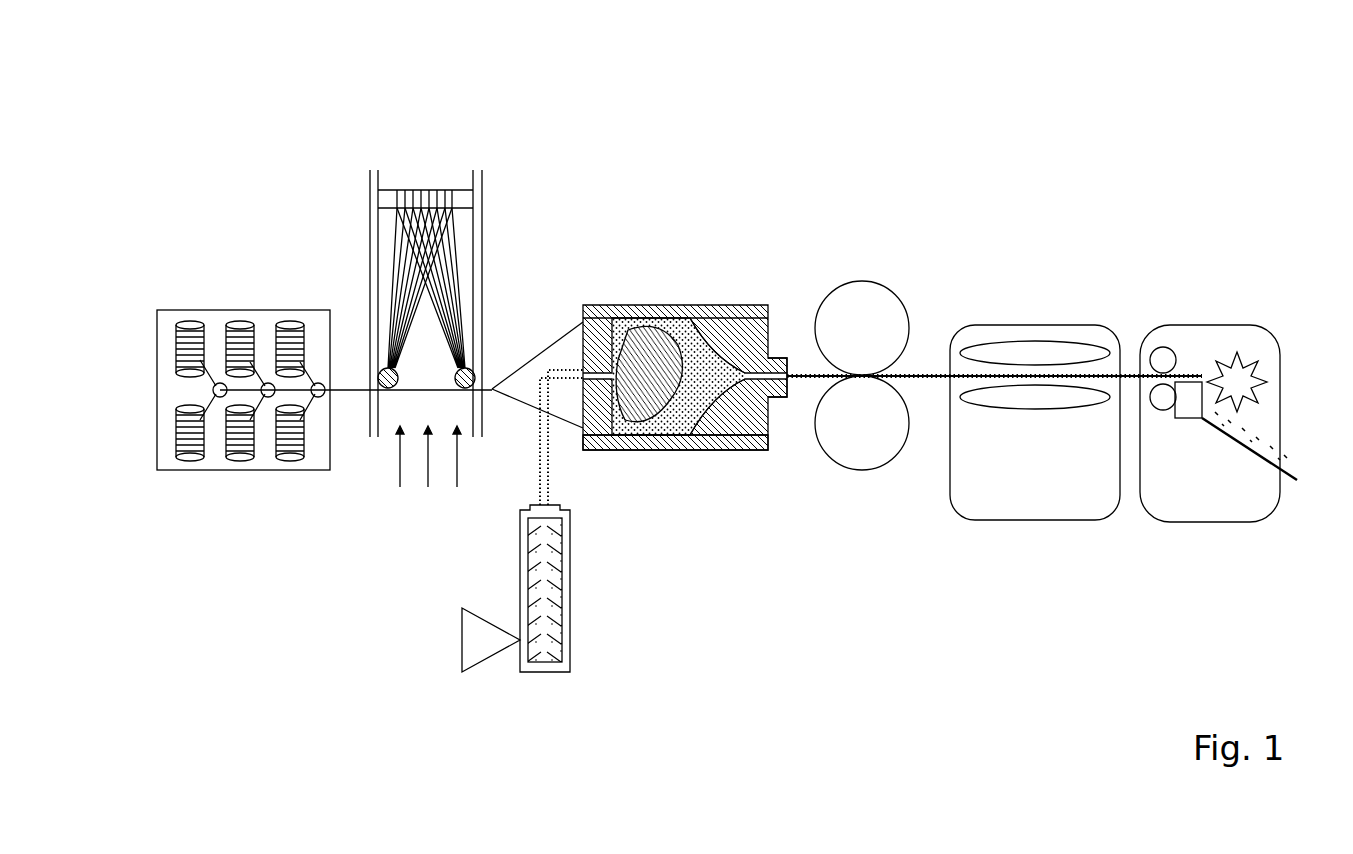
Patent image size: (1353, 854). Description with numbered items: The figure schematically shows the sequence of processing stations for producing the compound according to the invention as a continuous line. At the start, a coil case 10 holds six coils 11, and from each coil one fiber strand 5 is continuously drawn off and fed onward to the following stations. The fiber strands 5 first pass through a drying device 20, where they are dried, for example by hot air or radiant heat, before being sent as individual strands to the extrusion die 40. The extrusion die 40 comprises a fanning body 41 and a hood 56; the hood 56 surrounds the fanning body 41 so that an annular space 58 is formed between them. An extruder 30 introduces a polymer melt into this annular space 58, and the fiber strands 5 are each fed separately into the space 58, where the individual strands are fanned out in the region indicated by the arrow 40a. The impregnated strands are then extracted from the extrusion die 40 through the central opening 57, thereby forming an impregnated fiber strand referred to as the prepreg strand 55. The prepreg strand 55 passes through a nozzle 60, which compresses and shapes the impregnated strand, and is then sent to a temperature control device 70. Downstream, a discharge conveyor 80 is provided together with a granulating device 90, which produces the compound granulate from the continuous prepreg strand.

The fiber strand 5 is at (318, 388).
The coil case 10 is at (243, 335).
The coil 11 is at (285, 322).
The drying device 20 is at (426, 162).
The extruder 30 is at (570, 634).
The extrusion die 40 is at (692, 397).
The arrow 40a is at (645, 312).
The fanning body 41 is at (605, 452).
The prepreg strand 55 is at (805, 381).
The hood 56 is at (728, 452).
The central opening 57 is at (735, 312).
The annular space 58 is at (681, 312).
The nozzle 60 is at (784, 398).
The temperature control device 70 is at (883, 484).
The discharge conveyor 80 is at (1037, 500).
The granulating device 90 is at (1212, 500).